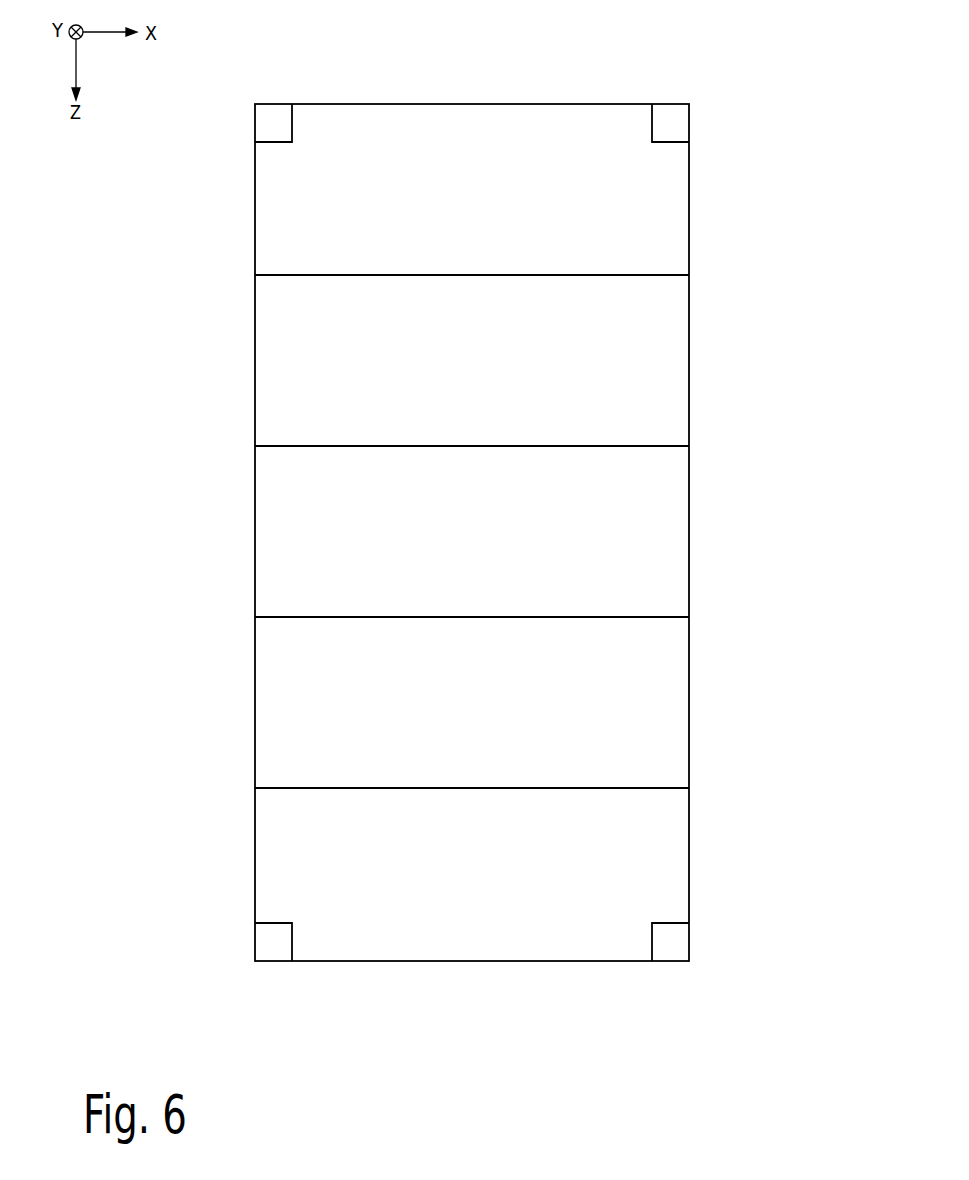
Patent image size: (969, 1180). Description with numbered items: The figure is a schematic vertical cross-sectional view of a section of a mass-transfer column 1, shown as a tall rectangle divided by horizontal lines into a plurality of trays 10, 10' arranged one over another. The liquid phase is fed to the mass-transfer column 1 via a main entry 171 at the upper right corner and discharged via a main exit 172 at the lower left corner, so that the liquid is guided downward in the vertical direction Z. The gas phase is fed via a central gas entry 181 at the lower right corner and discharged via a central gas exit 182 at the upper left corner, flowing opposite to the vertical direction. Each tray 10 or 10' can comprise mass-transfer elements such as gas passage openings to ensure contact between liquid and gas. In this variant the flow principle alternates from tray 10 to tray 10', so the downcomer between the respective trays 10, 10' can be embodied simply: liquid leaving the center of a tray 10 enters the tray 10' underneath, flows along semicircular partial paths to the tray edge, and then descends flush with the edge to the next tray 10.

The mass-transfer column 1 is at (793, 73).
The tray 10 is at (436, 433).
The tray 10' is at (433, 605).
The main entry 171 is at (671, 126).
The main exit 172 is at (273, 943).
The central gas entry 181 is at (671, 943).
The central gas exit 182 is at (273, 126).